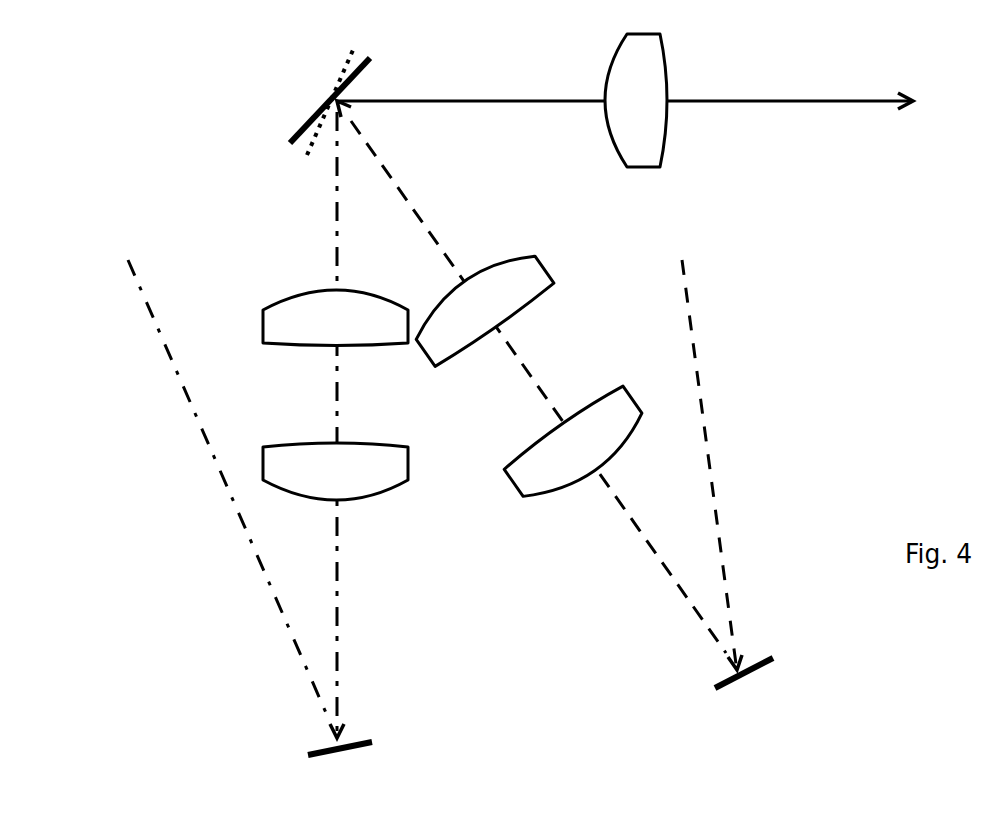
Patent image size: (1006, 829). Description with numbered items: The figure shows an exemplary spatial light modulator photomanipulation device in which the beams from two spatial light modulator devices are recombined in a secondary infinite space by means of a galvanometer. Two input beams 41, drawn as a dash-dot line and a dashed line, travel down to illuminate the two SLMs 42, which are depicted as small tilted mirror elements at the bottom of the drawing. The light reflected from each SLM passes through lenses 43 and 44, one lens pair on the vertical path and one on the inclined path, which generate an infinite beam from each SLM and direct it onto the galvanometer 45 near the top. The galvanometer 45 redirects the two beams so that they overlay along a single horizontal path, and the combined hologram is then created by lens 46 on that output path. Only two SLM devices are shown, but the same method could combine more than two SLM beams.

The input beams 41 is at (406, 491).
The SLMs 42 is at (509, 707).
The lens 43 is at (549, 448).
The lens 44 is at (480, 323).
The galvanometer 45 is at (324, 102).
The lens 46 is at (665, 100).